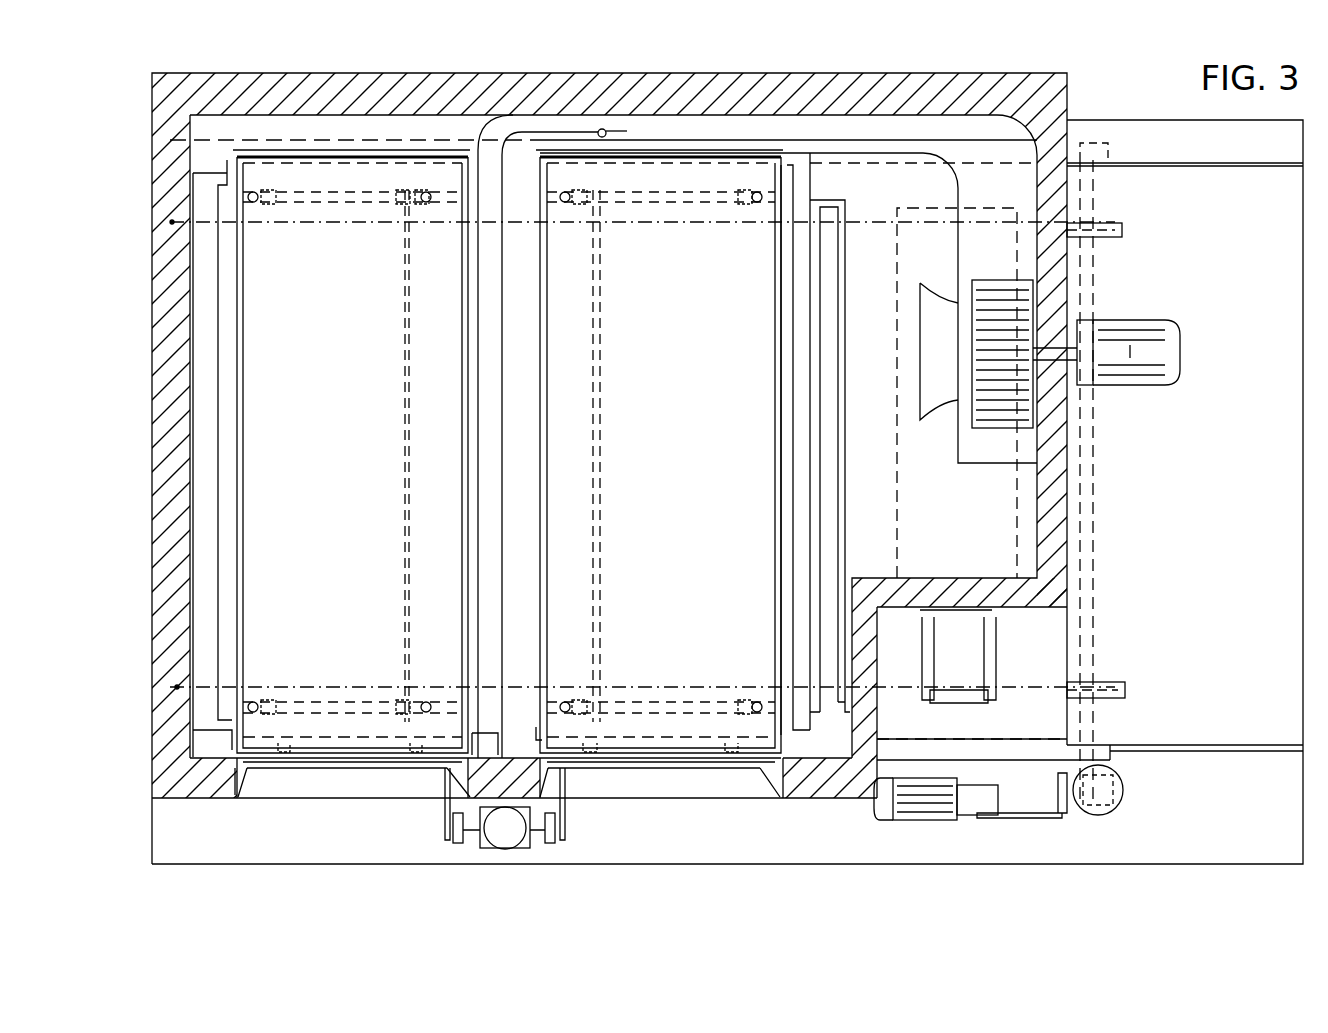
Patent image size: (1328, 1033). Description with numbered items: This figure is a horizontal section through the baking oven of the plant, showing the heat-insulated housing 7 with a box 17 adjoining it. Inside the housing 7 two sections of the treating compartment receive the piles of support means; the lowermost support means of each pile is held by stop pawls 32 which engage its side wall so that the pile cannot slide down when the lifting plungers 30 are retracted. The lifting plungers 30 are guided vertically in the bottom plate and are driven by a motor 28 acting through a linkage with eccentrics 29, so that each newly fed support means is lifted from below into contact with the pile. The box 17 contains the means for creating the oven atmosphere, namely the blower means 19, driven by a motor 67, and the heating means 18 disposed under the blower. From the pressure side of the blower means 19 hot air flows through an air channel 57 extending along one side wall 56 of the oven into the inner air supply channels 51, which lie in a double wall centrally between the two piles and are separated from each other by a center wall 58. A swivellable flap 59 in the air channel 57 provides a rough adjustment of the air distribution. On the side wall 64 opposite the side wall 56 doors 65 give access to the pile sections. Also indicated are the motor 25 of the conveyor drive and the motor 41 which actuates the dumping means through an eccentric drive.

The housing 7 is at (149, 323).
The box 17 is at (960, 92).
The heating means 18 is at (1003, 525).
The blower means 19 is at (1020, 395).
The motor 25 is at (1098, 815).
The motor 28 is at (492, 836).
The eccentrics 29 is at (556, 822).
The lifting plungers 30 is at (258, 208).
The stop pawls 32 is at (284, 148).
The motor 41 is at (905, 825).
The air supply channel 51 is at (497, 265).
The side wall 56 is at (730, 100).
The air channel 57 is at (790, 135).
The center wall 58 is at (505, 400).
The swivellable flaps 59 is at (606, 128).
The side wall 64 is at (215, 796).
The doors 65 is at (330, 772).
The motor 67 is at (1135, 320).